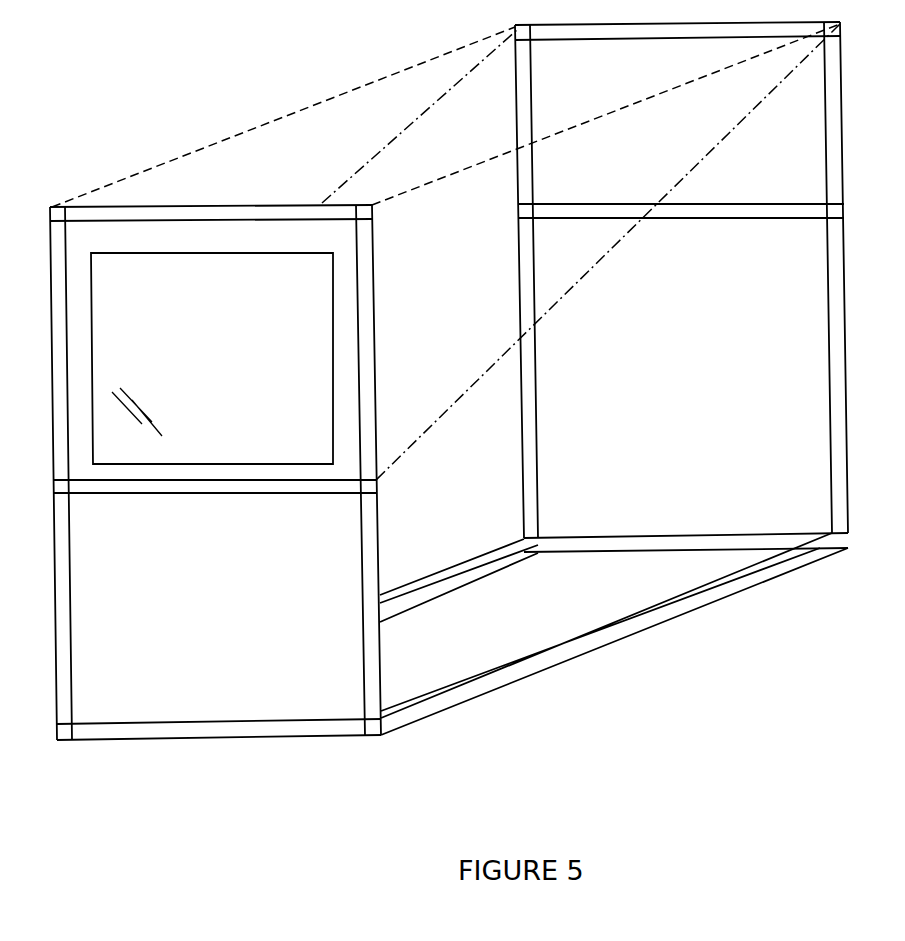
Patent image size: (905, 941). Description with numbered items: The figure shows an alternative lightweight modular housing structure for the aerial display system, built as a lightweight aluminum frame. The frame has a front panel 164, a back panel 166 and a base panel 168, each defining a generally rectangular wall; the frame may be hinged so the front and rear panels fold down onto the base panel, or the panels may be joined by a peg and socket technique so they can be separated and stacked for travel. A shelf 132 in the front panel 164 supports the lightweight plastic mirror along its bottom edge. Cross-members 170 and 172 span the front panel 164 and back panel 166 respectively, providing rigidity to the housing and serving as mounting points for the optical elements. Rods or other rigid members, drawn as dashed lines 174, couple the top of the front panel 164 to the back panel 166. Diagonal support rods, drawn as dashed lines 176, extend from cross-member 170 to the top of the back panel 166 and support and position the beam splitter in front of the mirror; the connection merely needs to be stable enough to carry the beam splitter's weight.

The shelf 132 is at (233, 383).
The front panel 164 is at (223, 608).
The back panel 166 is at (698, 405).
The base panel 168 is at (575, 617).
The cross-member 170 is at (305, 493).
The cross-member 172 is at (736, 220).
The rods 174 is at (246, 146).
The diagonal support rods 176 is at (380, 176).